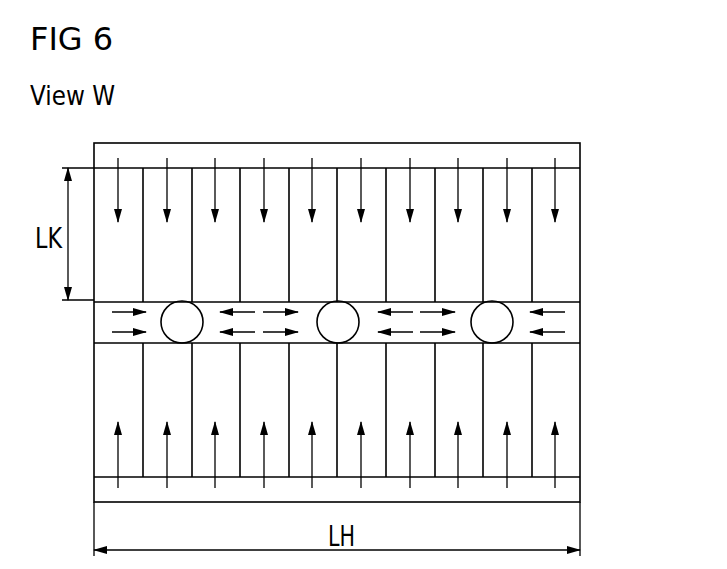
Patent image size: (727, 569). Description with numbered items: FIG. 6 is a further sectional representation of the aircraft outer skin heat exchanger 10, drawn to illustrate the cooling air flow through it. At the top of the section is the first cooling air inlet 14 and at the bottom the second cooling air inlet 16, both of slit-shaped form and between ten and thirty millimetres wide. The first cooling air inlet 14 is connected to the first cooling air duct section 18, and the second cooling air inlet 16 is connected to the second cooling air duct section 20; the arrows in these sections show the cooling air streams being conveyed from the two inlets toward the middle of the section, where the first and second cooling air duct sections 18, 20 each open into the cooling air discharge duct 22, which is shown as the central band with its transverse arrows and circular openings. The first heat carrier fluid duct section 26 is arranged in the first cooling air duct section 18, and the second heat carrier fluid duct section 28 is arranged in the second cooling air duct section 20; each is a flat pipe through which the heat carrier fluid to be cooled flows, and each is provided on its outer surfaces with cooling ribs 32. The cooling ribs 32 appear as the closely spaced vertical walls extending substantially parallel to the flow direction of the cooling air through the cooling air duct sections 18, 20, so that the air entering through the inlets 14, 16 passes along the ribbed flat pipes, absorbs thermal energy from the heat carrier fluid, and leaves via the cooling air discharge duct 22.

The aircraft outer skin heat exchanger 10 is at (565, 119).
The first cooling air inlet 14 is at (495, 158).
The second cooling air inlet 16 is at (523, 488).
The first cooling air duct section 18 is at (562, 191).
The second cooling air duct section 20 is at (122, 410).
The cooling air discharge duct 22 is at (178, 303).
The first heat carrier fluid duct section 26 is at (580, 228).
The second heat carrier fluid duct section 28 is at (580, 428).
The cooling ribs 32 is at (292, 410).